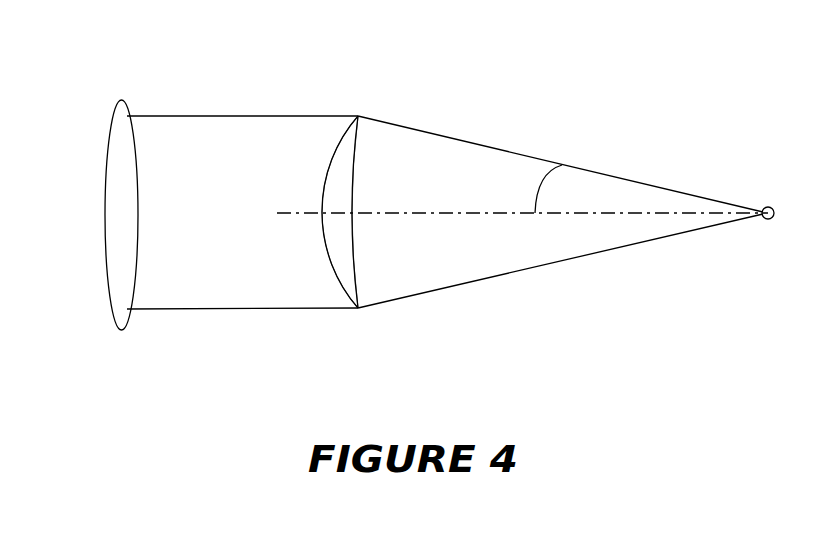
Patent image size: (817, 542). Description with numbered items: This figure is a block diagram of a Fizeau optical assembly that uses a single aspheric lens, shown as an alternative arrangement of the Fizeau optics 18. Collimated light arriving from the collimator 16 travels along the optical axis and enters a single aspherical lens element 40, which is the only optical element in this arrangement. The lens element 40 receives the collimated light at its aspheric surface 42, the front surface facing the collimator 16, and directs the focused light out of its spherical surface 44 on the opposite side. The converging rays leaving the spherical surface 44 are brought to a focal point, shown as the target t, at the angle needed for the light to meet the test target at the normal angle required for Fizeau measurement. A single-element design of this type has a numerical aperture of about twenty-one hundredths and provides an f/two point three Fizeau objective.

The collimator 16 is at (121, 103).
The Fizeau optics 18 is at (414, 50).
The aspherical lens element 40 is at (358, 311).
The aspheric surface 42 is at (328, 165).
The spherical surface 44 is at (352, 230).
The target t is at (765, 208).